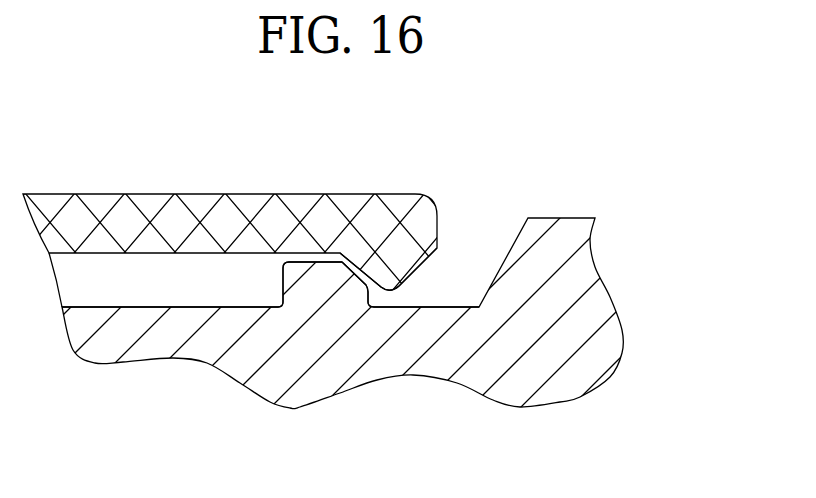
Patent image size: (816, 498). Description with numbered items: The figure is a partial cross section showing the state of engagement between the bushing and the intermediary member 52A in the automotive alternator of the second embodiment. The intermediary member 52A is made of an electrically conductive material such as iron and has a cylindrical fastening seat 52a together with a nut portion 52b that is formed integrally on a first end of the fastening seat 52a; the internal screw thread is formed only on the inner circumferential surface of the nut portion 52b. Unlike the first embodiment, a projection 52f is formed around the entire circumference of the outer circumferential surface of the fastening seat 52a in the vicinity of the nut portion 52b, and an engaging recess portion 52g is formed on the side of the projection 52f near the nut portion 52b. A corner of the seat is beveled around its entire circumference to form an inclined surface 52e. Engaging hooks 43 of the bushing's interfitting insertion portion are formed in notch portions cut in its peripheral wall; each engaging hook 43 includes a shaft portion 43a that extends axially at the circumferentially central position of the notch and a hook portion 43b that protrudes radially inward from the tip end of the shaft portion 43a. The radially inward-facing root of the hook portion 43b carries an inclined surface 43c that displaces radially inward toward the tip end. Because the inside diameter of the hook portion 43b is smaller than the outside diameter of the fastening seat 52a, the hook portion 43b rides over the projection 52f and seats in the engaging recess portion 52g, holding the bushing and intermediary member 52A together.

The engaging hook 43 is at (213, 193).
The shaft portion 43a is at (304, 210).
The hook portion 43b is at (392, 257).
The inclined surface 43c is at (386, 272).
The intermediary member 52A is at (592, 243).
The fastening seat 52a is at (170, 332).
The nut portion 52b is at (575, 275).
The inclined surface 52e is at (356, 266).
The projection 52f is at (315, 262).
The engaging recess portion 52g is at (433, 293).